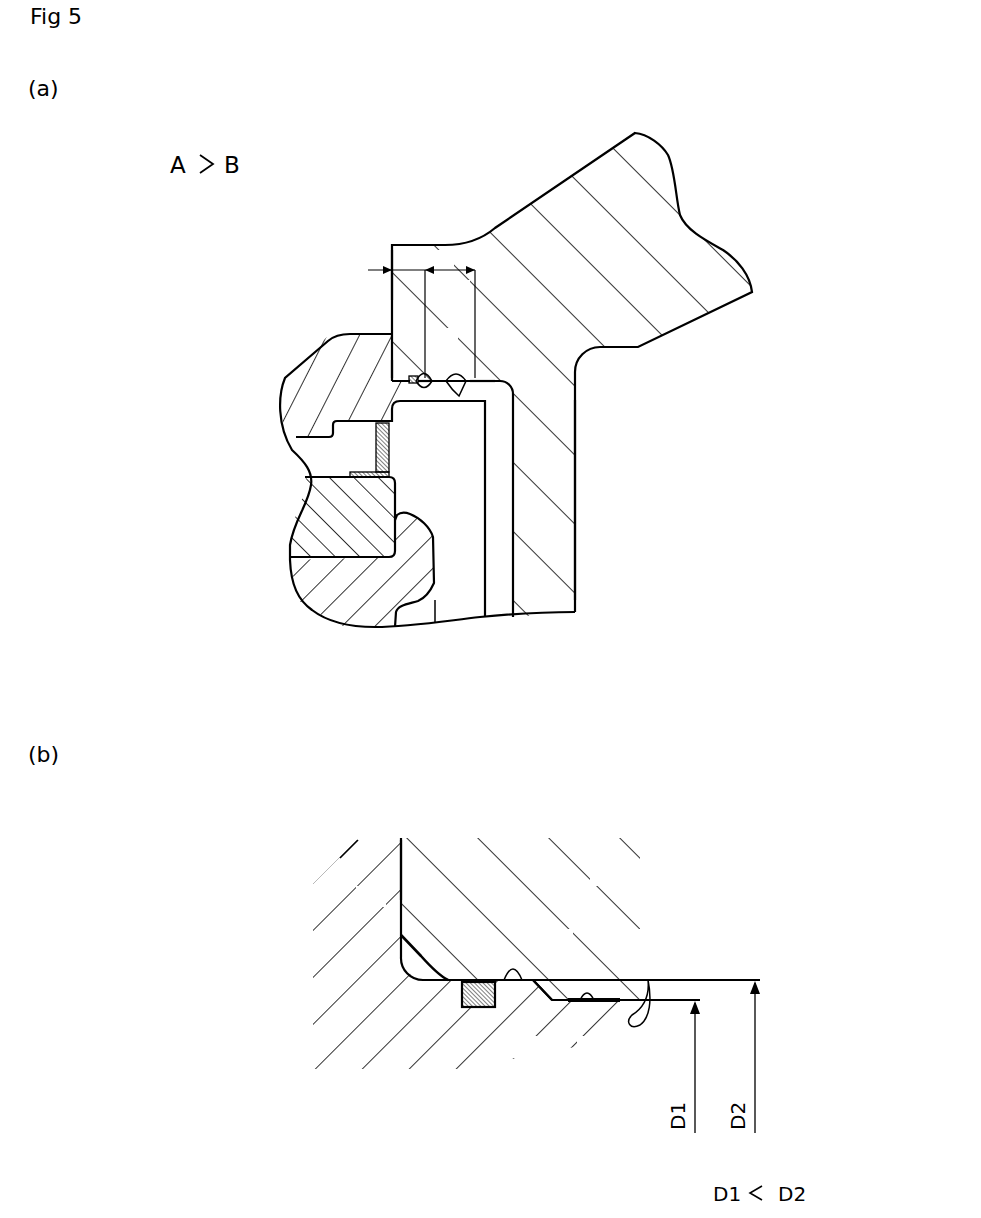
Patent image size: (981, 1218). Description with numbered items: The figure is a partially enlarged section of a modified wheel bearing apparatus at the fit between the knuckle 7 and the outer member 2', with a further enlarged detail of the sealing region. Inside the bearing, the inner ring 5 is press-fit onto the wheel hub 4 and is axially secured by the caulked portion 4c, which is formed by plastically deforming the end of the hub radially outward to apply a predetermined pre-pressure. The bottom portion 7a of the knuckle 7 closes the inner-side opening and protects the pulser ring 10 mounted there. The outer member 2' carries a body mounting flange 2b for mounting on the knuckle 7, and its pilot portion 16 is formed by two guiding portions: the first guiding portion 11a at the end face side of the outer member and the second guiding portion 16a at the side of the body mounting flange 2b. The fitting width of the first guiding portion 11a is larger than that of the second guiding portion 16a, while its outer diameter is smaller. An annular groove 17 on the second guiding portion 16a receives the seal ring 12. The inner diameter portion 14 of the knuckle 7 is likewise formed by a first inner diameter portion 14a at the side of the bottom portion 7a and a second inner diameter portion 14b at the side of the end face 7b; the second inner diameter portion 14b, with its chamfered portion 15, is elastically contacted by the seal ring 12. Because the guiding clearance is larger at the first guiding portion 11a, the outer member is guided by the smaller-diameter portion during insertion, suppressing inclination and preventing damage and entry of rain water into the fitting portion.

The knuckle 7 is at (596, 185).
The bottom portion 7a is at (565, 518).
The end face 7b is at (392, 262).
The outer member 2' is at (418, 701).
The body mounting flange 2b is at (356, 334).
The chamfered portion 15 is at (386, 362).
The seal ring 12 is at (410, 378).
The inner diameter portion 14 is at (519, 637).
The first inner diameter portion 14a is at (482, 378).
The second inner diameter portion 14b is at (428, 378).
The pilot portion 16 is at (510, 742).
The second guiding portion 16a is at (425, 385).
The first guiding portion 11a is at (458, 386).
The pulser ring 10 is at (375, 457).
The inner ring 5 is at (297, 527).
The wheel hub 4 is at (356, 570).
The caulked portion 4c is at (408, 543).
The annular groove 17 is at (483, 1008).